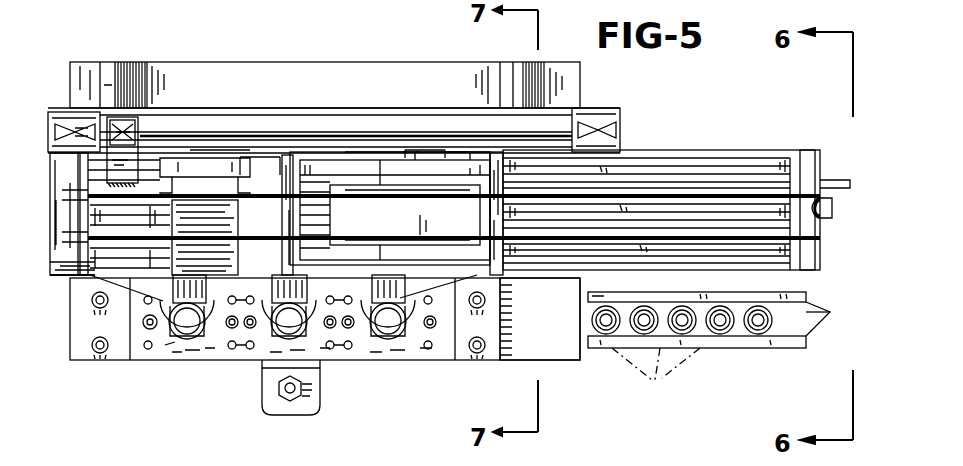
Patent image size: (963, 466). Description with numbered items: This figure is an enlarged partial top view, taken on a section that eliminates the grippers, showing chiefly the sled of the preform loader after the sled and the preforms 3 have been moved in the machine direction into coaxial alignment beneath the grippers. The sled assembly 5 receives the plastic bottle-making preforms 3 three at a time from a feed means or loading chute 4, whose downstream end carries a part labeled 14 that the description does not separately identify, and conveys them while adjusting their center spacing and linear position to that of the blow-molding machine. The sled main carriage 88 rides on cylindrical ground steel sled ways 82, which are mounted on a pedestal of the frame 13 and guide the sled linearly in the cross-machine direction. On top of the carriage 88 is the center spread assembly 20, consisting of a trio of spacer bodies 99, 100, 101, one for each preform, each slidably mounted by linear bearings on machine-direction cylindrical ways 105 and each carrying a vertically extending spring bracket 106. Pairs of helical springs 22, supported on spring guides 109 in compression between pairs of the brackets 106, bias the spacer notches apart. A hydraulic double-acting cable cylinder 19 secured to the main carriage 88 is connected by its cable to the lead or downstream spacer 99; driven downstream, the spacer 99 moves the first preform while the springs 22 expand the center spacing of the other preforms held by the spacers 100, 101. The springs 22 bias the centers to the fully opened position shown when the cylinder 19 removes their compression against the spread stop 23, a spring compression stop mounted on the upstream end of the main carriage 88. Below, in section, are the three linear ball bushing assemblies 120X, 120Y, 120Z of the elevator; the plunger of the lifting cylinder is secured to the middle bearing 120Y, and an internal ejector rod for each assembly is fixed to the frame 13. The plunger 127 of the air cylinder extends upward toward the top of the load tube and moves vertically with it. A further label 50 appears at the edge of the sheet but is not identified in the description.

The sled ways 82 is at (132, 66).
The cable cylinder 19 is at (177, 120).
The spring bracket 106 is at (72, 162).
The helical springs 22 is at (196, 150).
The spacer body 100 is at (258, 158).
The spacer body 101 is at (412, 160).
The center spread assembly 20 is at (432, 150).
The machine direction cylindrical ways 105 is at (684, 252).
The spread stop 23 is at (822, 210).
The spring guides 109 is at (386, 262).
The lead spacer 99 is at (84, 264).
The sled main carriage 88 is at (58, 286).
The frame 13 is at (552, 365).
The linear ball bushing assembly 120X is at (180, 345).
The middle linear bearing 120Y is at (270, 345).
The linear ball bushing assembly 120Z is at (376, 345).
The plunger 127 is at (290, 402).
The loading chute 4 is at (762, 354).
The track end 14 is at (808, 312).
The sled assembly 5 is at (650, 465).
The preforms 3 is at (398, 462).
The support 50 is at (491, 457).